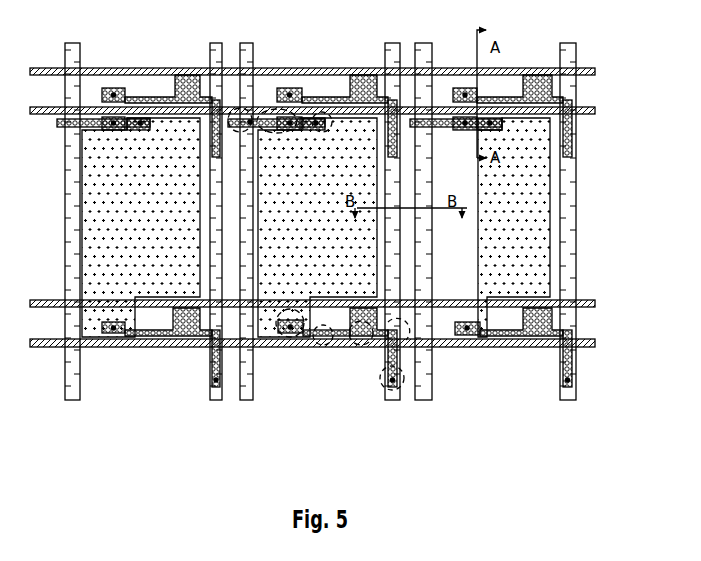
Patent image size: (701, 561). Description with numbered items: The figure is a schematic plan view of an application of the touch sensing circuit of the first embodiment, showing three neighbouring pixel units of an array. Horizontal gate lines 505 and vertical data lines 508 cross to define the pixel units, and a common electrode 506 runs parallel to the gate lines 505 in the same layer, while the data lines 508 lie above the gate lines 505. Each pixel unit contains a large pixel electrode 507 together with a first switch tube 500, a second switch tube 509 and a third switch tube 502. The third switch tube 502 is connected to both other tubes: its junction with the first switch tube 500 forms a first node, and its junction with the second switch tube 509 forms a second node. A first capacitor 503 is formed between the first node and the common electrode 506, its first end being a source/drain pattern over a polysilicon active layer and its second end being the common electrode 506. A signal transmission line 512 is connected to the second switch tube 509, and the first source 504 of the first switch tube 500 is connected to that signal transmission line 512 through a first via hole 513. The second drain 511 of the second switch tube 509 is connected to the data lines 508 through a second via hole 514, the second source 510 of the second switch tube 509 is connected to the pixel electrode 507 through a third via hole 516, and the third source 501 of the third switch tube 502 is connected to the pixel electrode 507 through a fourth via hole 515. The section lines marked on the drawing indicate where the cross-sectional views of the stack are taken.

The first switch tube 500 is at (407, 343).
The third source 501 is at (289, 345).
The third switch tube 502 is at (332, 345).
The first capacitor 503 is at (357, 318).
The first source 504 is at (394, 392).
The gate lines 505 is at (578, 343).
The common electrode 506 is at (578, 304).
The pixel electrode 507 is at (180, 283).
The data lines 508 is at (247, 44).
The second switch tube 509 is at (282, 120).
The second source 510 is at (320, 120).
The second drain 511 is at (238, 117).
The signal transmission line 512 is at (263, 192).
The first via hole 513 is at (405, 390).
The second via hole 514 is at (242, 112).
The fourth via hole 515 is at (283, 347).
The third via hole 516 is at (322, 118).